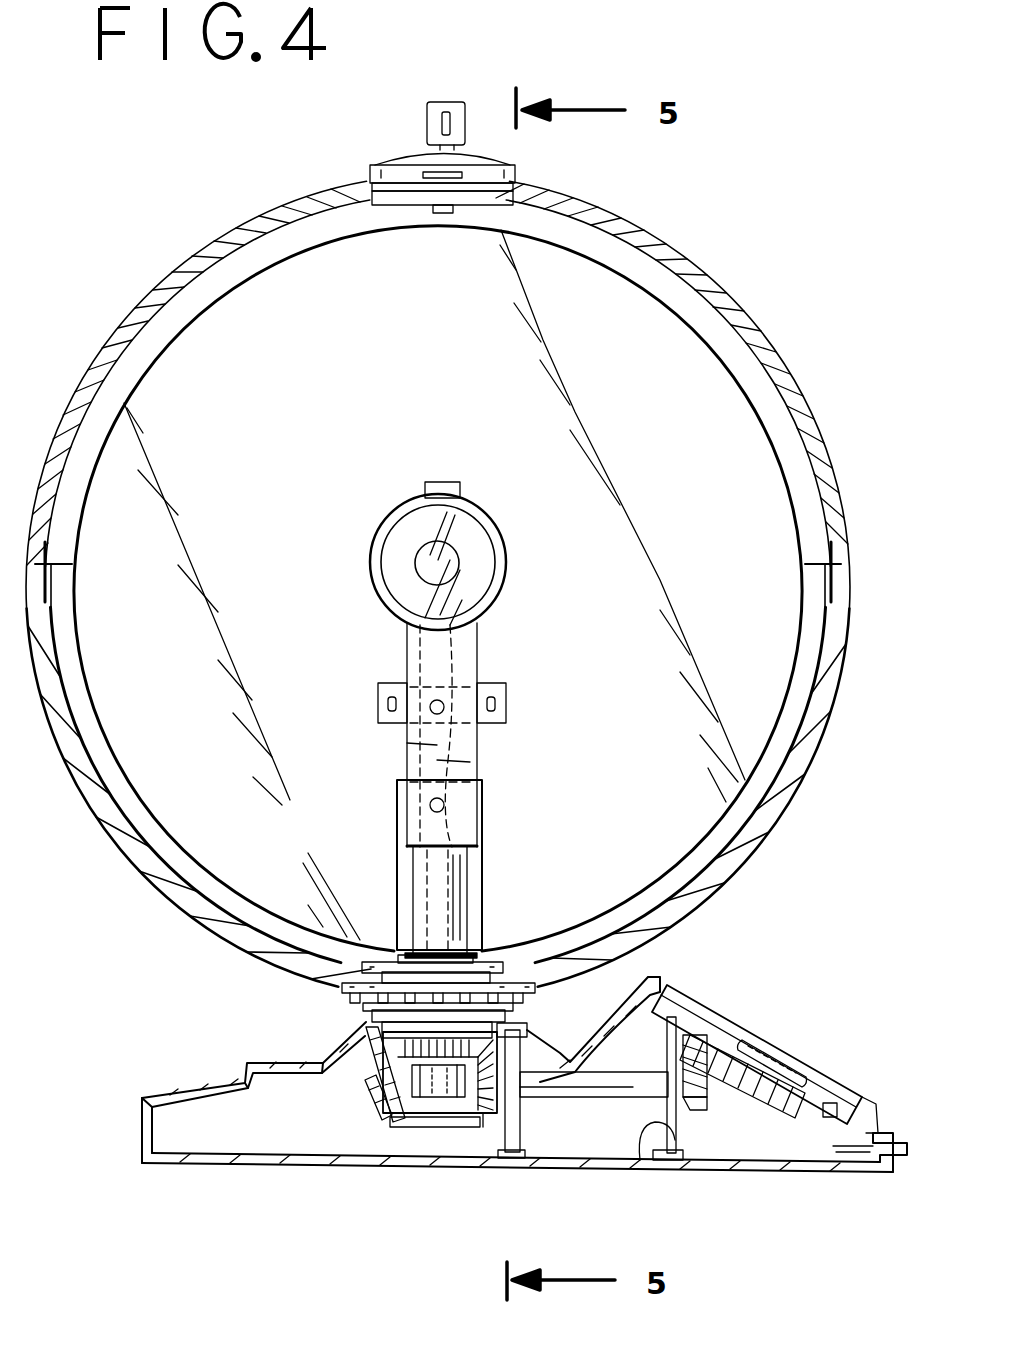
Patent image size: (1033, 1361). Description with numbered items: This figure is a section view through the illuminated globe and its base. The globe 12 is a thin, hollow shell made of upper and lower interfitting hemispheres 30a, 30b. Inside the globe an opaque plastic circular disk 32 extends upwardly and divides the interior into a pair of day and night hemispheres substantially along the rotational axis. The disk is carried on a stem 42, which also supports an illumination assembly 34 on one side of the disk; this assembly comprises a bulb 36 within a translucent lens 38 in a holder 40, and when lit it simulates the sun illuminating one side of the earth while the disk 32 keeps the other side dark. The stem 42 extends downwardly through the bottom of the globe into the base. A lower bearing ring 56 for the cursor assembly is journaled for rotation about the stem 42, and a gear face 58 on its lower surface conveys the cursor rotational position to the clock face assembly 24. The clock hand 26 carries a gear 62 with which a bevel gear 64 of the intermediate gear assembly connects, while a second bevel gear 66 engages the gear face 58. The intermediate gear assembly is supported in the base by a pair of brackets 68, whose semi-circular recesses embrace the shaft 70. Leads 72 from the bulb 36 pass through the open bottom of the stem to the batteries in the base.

The globe 12 is at (833, 426).
The clock face assembly 24 is at (760, 1037).
The hand 26 is at (790, 1080).
The upper hemisphere 30a is at (228, 236).
The lower hemisphere 30b is at (202, 918).
The circular disk 32 is at (247, 446).
The illumination assembly 34 is at (451, 662).
The bulb 36 is at (452, 538).
The translucent lens 38 is at (478, 548).
The holder 40 is at (505, 580).
The stem 42 is at (397, 880).
The lower bearing ring 56 is at (400, 1020).
The gear face 58 is at (375, 1030).
The gear 62 is at (790, 1107).
The bevel gear 64 is at (694, 1108).
The second bevel gear 66 is at (497, 1143).
The brackets 68 is at (580, 1095).
The shaft 70 is at (647, 1130).
The leads 72 is at (480, 1147).